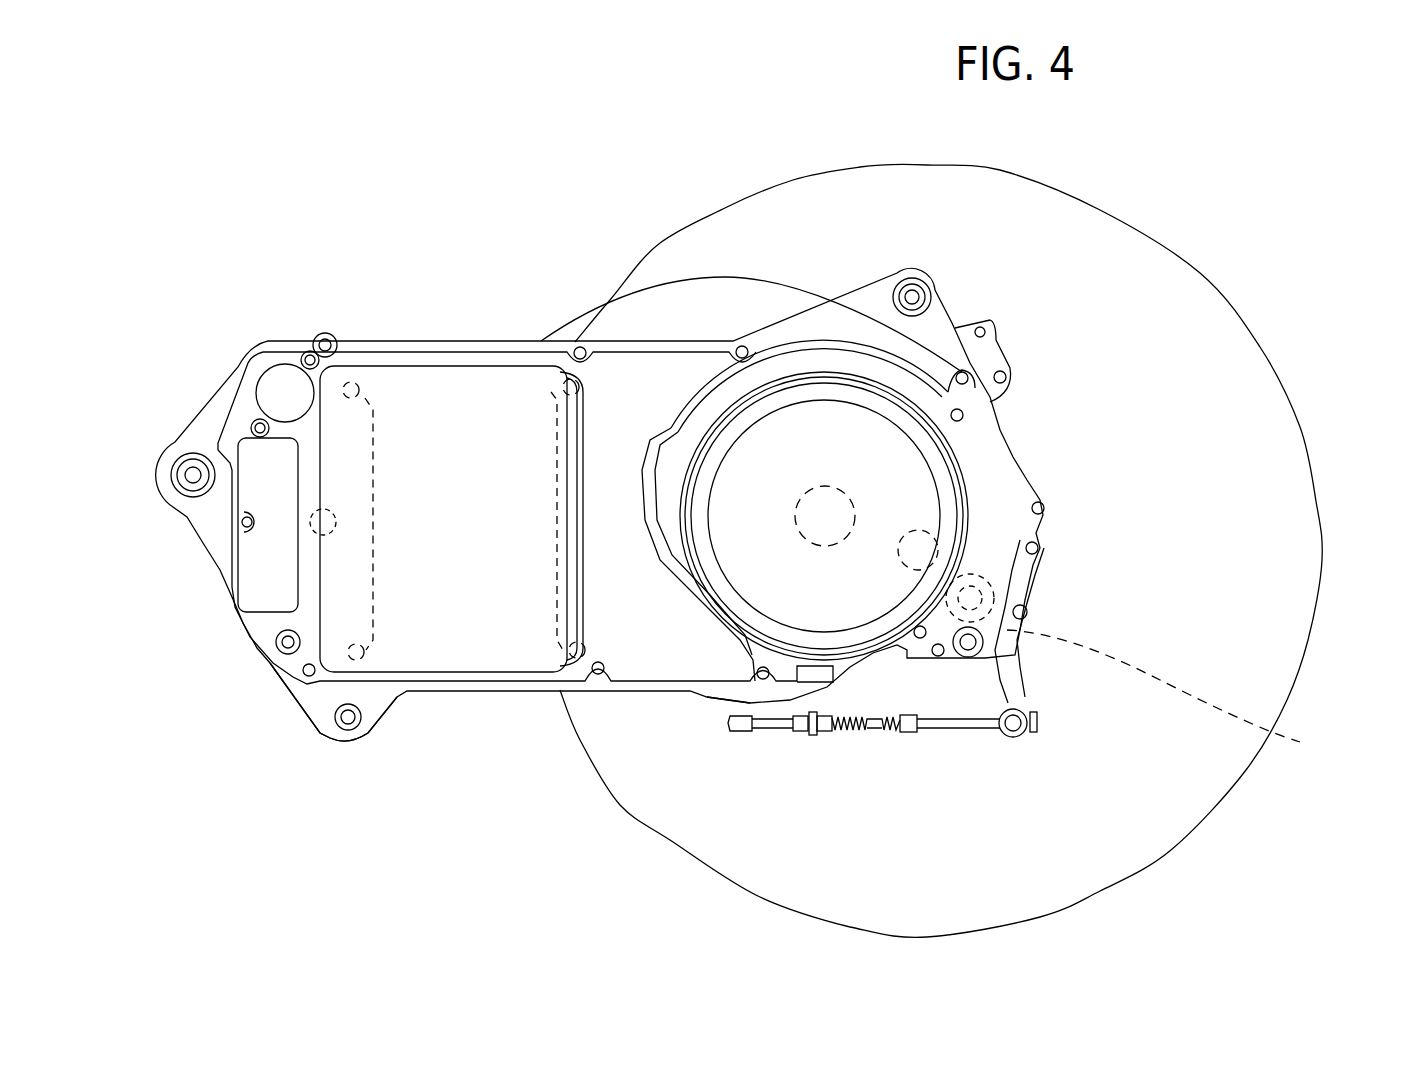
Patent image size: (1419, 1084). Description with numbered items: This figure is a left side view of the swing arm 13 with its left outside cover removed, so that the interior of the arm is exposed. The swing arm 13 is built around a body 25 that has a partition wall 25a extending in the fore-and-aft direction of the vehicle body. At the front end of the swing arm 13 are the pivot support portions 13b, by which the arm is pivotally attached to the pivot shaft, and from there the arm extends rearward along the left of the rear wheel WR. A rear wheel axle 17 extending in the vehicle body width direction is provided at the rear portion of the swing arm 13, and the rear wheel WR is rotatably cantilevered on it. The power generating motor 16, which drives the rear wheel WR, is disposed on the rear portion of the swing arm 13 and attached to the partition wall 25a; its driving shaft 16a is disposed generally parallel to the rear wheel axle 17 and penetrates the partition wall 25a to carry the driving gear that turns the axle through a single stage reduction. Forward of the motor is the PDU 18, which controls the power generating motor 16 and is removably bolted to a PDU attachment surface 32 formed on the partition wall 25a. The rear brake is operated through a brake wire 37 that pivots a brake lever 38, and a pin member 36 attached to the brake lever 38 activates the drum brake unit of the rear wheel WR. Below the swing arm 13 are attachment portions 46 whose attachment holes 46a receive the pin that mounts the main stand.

The swing arm 13 is at (400, 340).
The pivot support portions 13b is at (198, 493).
The power generating motor 16 is at (893, 485).
The driving shaft 16a is at (826, 495).
The rear wheel axle 17 is at (917, 552).
The PDU 18 is at (492, 623).
The body 25 is at (620, 387).
The partition wall 25a is at (657, 650).
The PDU attachment surface 32 is at (478, 447).
The pin member 36 is at (1176, 700).
The brake wire 37 is at (771, 732).
The brake lever 38 is at (1015, 685).
The attachment portions 46 is at (323, 700).
The attachment holes 46a is at (348, 727).
The rear wheel WR is at (1283, 675).